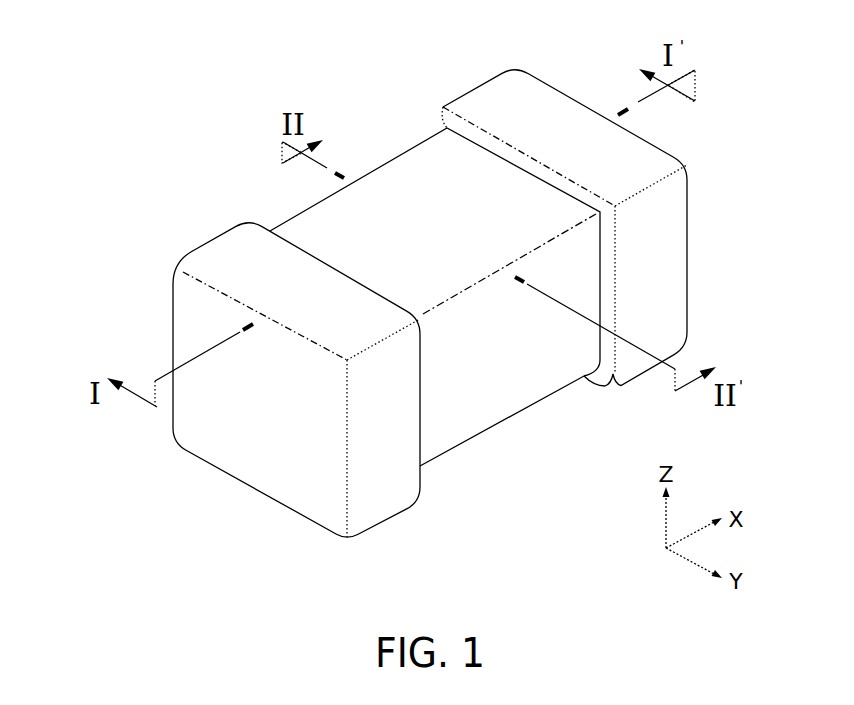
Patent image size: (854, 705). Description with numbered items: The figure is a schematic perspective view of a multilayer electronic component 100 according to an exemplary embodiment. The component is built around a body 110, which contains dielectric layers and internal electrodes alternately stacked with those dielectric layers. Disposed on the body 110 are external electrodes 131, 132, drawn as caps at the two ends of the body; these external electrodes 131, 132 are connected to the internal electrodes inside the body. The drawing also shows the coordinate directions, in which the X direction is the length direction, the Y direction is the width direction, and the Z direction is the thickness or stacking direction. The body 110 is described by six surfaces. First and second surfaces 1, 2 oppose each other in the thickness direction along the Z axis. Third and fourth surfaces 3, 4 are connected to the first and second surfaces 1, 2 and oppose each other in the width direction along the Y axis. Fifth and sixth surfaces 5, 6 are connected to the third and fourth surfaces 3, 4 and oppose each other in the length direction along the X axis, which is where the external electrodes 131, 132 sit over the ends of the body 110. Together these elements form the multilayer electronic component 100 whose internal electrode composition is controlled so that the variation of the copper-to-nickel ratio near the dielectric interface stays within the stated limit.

The multilayer electronic component 100 is at (213, 38).
The body 110 is at (464, 298).
The external electrode 131 is at (232, 252).
The external electrode 132 is at (487, 105).
The first surface 1 is at (470, 393).
The second surface 2 is at (445, 186).
The third surface 3 is at (266, 436).
The fourth surface 4 is at (636, 242).
The fifth surface 5 is at (525, 360).
The sixth surface 6 is at (392, 208).